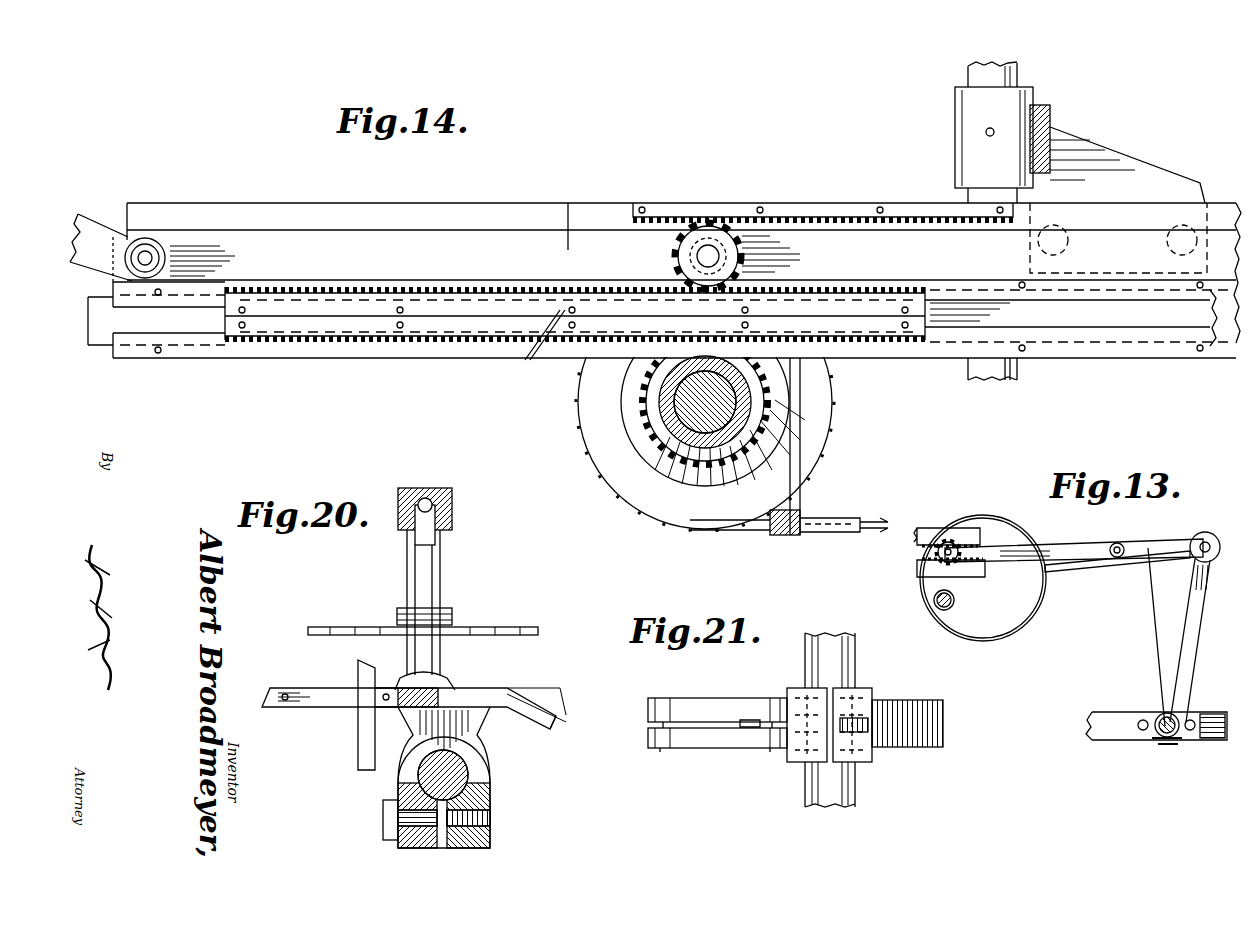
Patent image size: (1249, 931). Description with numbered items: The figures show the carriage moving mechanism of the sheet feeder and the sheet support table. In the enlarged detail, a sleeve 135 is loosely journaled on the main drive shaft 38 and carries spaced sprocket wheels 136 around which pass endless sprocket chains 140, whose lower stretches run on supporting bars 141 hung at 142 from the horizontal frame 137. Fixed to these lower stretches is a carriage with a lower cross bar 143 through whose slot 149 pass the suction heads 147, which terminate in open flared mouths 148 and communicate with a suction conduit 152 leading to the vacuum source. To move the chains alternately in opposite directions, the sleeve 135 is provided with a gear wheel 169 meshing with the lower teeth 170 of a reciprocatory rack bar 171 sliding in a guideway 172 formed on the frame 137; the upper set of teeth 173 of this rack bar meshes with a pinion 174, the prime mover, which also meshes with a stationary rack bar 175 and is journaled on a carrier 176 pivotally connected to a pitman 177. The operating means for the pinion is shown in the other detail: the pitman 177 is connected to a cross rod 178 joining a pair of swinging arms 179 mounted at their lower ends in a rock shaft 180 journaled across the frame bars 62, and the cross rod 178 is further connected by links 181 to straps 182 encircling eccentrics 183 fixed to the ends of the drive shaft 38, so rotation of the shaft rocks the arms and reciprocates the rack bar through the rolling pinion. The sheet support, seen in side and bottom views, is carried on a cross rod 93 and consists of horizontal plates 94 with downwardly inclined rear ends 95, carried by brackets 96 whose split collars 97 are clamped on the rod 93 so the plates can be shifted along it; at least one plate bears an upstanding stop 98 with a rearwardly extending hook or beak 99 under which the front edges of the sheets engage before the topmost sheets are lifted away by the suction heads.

In FIG. 14, the horizontal frame 137 is at (374, 215).
In FIG. 14, the pitman 177 is at (92, 222).
In FIG. 13, the pitman 177 is at (1148, 546).
In FIG. 14, the guideway 172 is at (200, 300).
In FIG. 14, the stationary rack bar 175 is at (680, 215).
In FIG. 13, the stationary rack bar 175 is at (928, 527).
In FIG. 14, the carrier 176 is at (573, 213).
In FIG. 13, the carrier 176 is at (1088, 548).
In FIG. 14, the pinion 174 is at (676, 263).
In FIG. 13, the pinion 174 is at (935, 553).
In FIG. 14, the upper set of teeth 173 is at (530, 275).
In FIG. 13, the upper set of teeth 173 is at (915, 570).
In FIG. 14, the lower teeth 170 is at (672, 320).
In FIG. 14, the reciprocatory rack bar 171 is at (531, 351).
In FIG. 14, the sprocket wheels 136 is at (580, 418).
In FIG. 14, the gear wheel 169 is at (672, 440).
In FIG. 14, the sleeve 135 is at (662, 405).
In FIG. 14, the drive shaft 38 is at (655, 427).
In FIG. 13, the drive shaft 38 is at (933, 598).
In FIG. 14, the hangers 142 is at (803, 499).
In FIG. 14, the supporting bars 141 is at (822, 536).
In FIG. 14, the sprocket chains 140 is at (752, 532).
In FIG. 20, the suction conduit 152 is at (428, 498).
In FIG. 20, the suction heads 147 is at (442, 572).
In FIG. 20, the slot 149 is at (455, 612).
In FIG. 20, the lower cross bar 143 is at (392, 620).
In FIG. 20, the flared mouths 148 is at (446, 678).
In FIG. 20, the horizontal plates 94 is at (500, 690).
In FIG. 21, the horizontal plates 94 is at (700, 696).
In FIG. 20, the downwardly inclined rear ends 95 is at (548, 728).
In FIG. 21, the downwardly inclined rear ends 95 is at (925, 740).
In FIG. 20, the upstanding stop 98 is at (358, 672).
In FIG. 21, the upstanding stop 98 is at (750, 730).
In FIG. 20, the hook or beak 99 is at (392, 680).
In FIG. 20, the brackets 96 is at (480, 745).
In FIG. 20, the split collars 97 is at (400, 798).
In FIG. 21, the split collars 97 is at (840, 768).
In FIG. 20, the cross rod 93 is at (468, 778).
In FIG. 21, the cross rod 93 is at (848, 670).
In FIG. 13, the straps 182 is at (1046, 597).
In FIG. 13, the eccentrics 183 is at (1023, 612).
In FIG. 13, the links 181 is at (1105, 566).
In FIG. 13, the cross rod 178 is at (1205, 532).
In FIG. 13, the swinging arms 179 is at (1190, 618).
In FIG. 13, the frame bars 62 is at (1100, 715).
In FIG. 13, the rock shaft 180 is at (1160, 740).